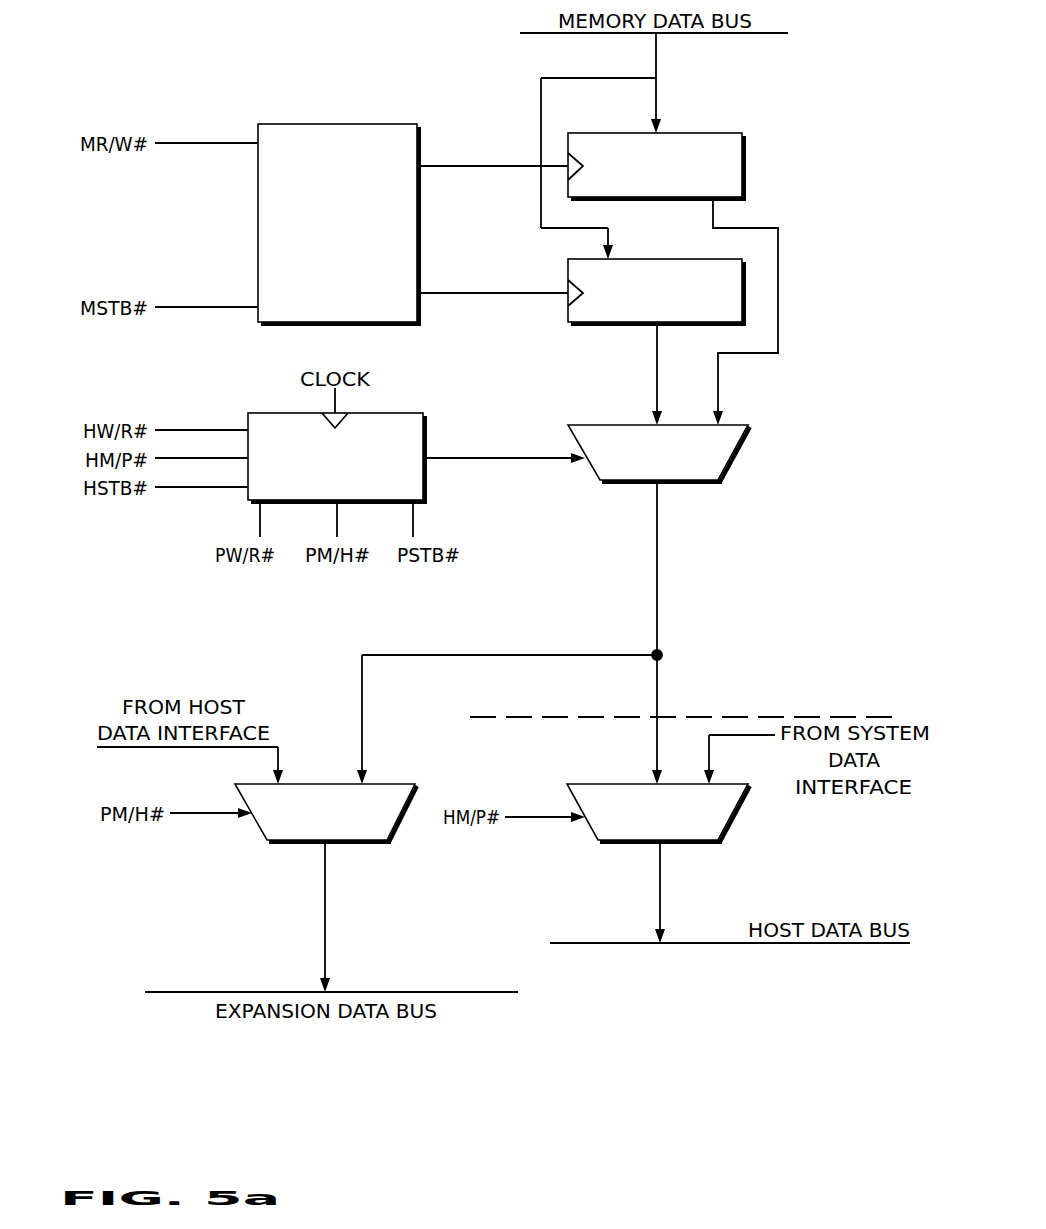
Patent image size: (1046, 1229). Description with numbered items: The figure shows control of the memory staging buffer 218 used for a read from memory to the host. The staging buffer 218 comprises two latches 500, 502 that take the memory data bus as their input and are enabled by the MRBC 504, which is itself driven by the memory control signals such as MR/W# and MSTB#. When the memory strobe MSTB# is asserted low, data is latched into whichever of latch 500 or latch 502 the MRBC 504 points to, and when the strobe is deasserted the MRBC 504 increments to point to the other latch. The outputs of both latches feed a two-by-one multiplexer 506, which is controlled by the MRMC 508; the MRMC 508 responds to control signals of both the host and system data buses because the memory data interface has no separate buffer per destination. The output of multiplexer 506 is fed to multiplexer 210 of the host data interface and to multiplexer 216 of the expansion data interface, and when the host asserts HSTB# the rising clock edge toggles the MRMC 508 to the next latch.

The latch 500 is at (728, 189).
The latch 502 is at (728, 314).
The MRBC (Memory Read Buffer Control) 504 is at (412, 318).
The 2 by 1 multiplexer 506 is at (705, 479).
The MRMC (Memory Read Mux Control) 508 is at (417, 499).
The multiplexer of the expansion data interface 216 is at (368, 832).
The multiplexer of the host data interface 210 is at (702, 834).
The staging buffer 218 is at (685, 704).